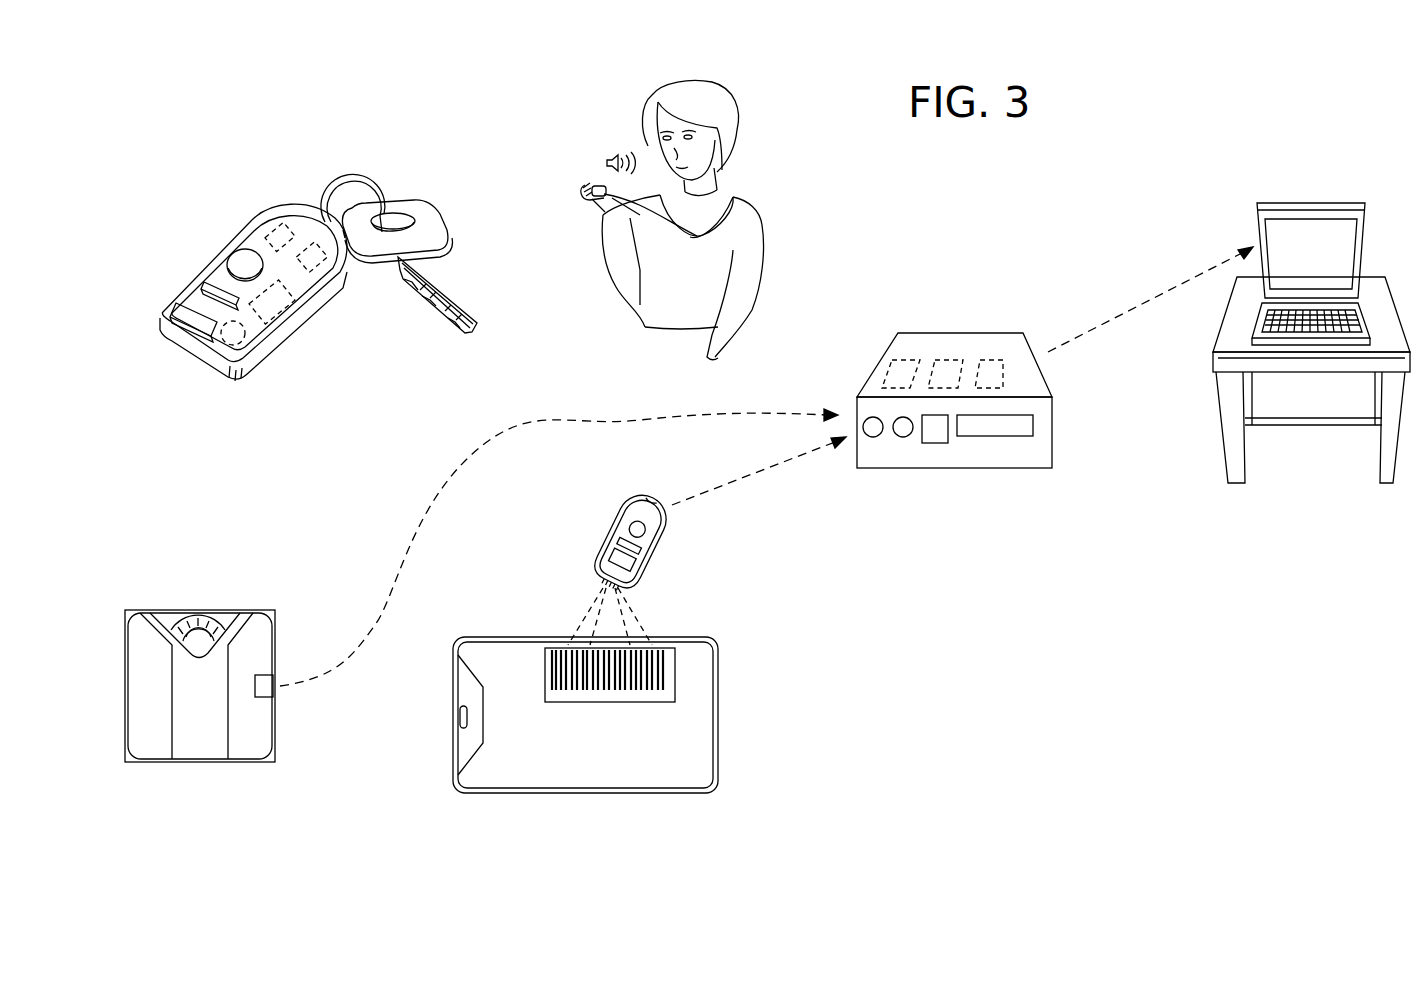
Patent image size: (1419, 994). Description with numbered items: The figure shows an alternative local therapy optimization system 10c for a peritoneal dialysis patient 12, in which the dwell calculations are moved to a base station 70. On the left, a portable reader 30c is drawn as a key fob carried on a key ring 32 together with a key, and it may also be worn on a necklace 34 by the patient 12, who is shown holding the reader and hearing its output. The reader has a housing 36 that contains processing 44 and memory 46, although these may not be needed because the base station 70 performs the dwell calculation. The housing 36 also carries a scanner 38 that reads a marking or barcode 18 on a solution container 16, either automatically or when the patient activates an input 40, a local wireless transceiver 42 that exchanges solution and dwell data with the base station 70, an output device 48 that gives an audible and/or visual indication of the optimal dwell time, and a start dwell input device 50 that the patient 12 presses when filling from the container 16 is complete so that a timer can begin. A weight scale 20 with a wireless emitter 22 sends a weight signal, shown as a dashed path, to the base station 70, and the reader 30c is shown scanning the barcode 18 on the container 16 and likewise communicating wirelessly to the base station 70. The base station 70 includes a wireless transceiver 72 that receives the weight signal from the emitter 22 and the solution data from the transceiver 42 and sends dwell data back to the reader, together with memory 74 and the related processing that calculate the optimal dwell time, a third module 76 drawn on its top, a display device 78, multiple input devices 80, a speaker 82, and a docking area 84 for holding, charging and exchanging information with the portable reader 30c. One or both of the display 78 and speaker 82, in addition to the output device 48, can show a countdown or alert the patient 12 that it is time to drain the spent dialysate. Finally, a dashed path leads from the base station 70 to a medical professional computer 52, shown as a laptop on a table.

The system 10c is at (494, 125).
The patient 12 is at (752, 208).
The solution container 16 is at (695, 683).
The marking or barcode 18 is at (670, 652).
The scale 20 is at (172, 610).
The wireless emitter 22 is at (272, 685).
The portable reader 30c is at (290, 210).
The key ring 32 is at (360, 175).
The necklace 34 is at (760, 234).
The housing 36 is at (215, 252).
The scanner 38 is at (195, 315).
The input 40 is at (210, 287).
The local wireless transceiver 42 is at (298, 322).
The processing 44 is at (280, 222).
The memory 46 is at (333, 282).
The output device 48 is at (257, 366).
The start dwell input device 50 is at (244, 262).
The medical professional computer 52 is at (1272, 203).
The base station 70 is at (1025, 336).
The wireless transceiver 72 is at (890, 363).
The memory 74 is at (947, 366).
The transceiver module 76 is at (992, 366).
The display device 78 is at (1000, 428).
The input devices 80 is at (873, 435).
The speaker 82 is at (903, 435).
The docking area 84 is at (937, 432).